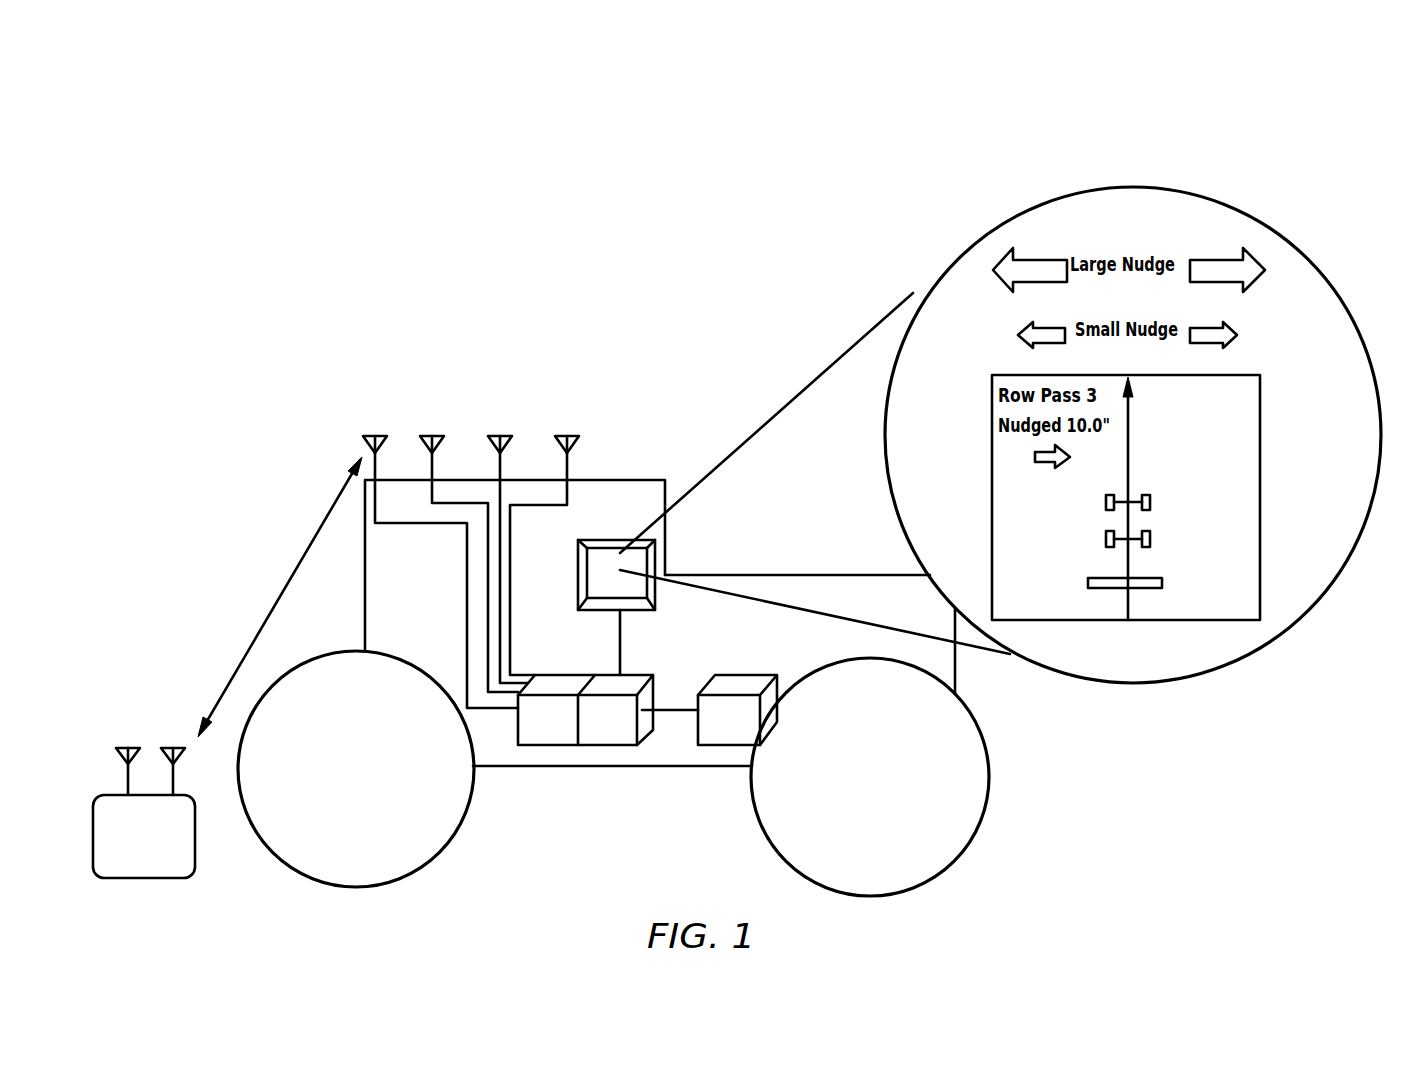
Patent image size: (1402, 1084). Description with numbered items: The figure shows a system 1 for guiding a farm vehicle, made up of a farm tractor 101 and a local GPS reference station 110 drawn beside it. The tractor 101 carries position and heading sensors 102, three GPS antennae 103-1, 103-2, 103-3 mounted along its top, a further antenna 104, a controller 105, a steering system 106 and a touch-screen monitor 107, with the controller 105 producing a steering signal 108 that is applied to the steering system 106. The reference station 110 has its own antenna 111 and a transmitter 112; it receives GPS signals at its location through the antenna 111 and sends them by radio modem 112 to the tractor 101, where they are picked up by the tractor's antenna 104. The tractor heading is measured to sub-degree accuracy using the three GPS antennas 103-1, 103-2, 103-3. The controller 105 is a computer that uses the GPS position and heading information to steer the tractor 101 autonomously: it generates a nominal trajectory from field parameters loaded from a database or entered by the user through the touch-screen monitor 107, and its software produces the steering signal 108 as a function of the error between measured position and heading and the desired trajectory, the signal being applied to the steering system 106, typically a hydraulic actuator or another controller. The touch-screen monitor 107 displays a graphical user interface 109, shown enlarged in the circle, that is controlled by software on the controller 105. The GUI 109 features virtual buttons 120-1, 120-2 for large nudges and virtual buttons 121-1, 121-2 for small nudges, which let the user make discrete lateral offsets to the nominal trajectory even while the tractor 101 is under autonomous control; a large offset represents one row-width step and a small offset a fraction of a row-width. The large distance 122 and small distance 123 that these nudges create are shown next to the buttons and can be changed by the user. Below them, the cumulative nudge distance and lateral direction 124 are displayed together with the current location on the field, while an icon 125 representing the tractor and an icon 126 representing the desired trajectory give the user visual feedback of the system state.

The system 1 is at (728, 198).
The farm tractor 101 is at (649, 490).
The position and heading sensors 102 is at (553, 680).
The GPS antenna 103-1 is at (463, 549).
The GPS antenna 103-2 is at (501, 544).
The GPS antenna 103-3 is at (550, 540).
The antenna 104 is at (436, 557).
The controller 105 is at (636, 680).
The steering system 106 is at (745, 682).
The touch-screen monitor 107 is at (606, 553).
The steering signal 108 is at (681, 708).
The graphical user interface 109 is at (1199, 191).
The GPS reference station 110 is at (161, 851).
The antenna 111 is at (128, 758).
The transmitter 112 is at (173, 758).
The virtual button 120-1 is at (1030, 263).
The virtual button 120-2 is at (1227, 263).
The virtual button 121-1 is at (1020, 335).
The virtual button 121-2 is at (1235, 335).
The large distance 122 is at (1150, 286).
The small distance 123 is at (1145, 352).
The cumulative nudge distance and lateral direction 124 is at (1032, 444).
The tractor icon 125 is at (1135, 447).
The desired trajectory icon 126 is at (1143, 518).